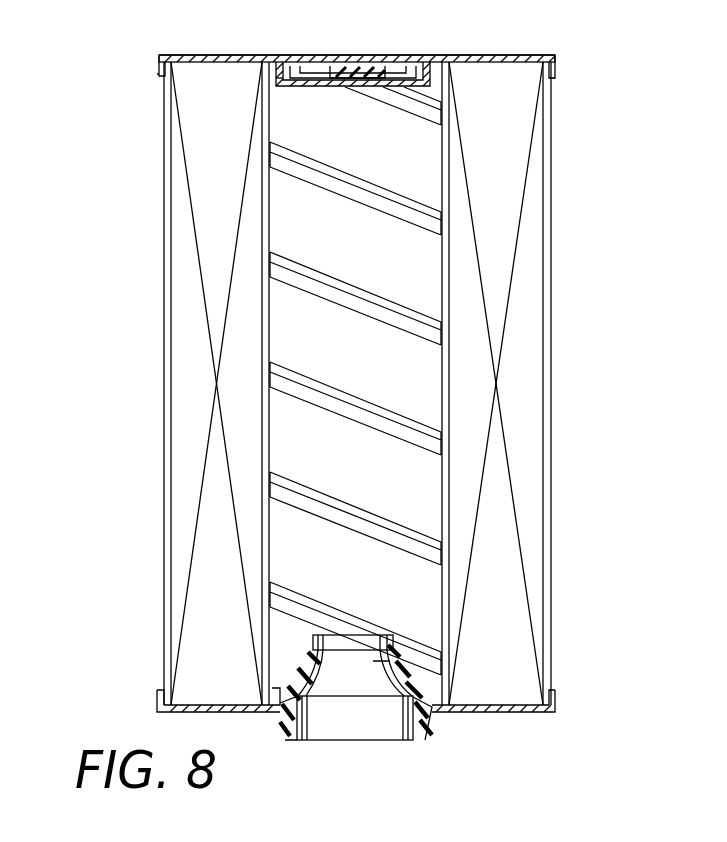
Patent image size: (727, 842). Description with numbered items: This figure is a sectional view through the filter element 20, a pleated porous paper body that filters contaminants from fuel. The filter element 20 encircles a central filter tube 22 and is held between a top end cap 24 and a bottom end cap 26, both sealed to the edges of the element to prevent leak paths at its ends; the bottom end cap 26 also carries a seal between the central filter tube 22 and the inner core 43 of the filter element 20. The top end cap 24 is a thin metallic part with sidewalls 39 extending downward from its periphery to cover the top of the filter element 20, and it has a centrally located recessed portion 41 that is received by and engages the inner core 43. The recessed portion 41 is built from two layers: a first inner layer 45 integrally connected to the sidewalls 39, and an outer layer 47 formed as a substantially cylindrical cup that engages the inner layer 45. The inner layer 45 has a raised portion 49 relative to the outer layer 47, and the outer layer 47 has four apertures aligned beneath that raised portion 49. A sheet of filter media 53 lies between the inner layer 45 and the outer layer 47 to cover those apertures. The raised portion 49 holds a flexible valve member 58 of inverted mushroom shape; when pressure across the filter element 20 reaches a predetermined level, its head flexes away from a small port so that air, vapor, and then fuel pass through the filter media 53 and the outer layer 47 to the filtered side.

The filter element 20 is at (551, 381).
The central filter tube 22 is at (427, 725).
The top end cap 24 is at (557, 53).
The bottom end cap 26 is at (553, 703).
The sidewalls 39 is at (157, 74).
The recessed portion 41 is at (415, 56).
The inner core 43 is at (287, 197).
The inner layer 45 is at (297, 66).
The outer layer 47 is at (428, 88).
The raised portion 49 is at (408, 63).
The sheet of filter media 53 is at (294, 82).
The flexible valve member 58 is at (362, 64).